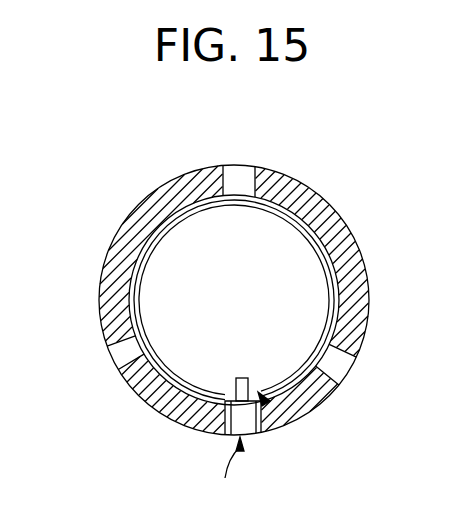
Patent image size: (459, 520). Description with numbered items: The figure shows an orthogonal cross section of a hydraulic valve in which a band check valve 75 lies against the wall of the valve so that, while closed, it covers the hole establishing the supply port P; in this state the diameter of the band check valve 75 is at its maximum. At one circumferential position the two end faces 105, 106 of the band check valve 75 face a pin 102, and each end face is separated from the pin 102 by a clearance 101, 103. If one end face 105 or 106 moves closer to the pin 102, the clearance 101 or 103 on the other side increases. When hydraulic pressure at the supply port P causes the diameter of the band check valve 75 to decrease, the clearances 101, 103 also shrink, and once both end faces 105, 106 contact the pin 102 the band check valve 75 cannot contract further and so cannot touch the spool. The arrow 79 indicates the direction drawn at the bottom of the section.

The band check valve 75 is at (298, 218).
The insertion direction 79 is at (218, 467).
The clearance 101 is at (208, 409).
The pin 102 is at (238, 378).
The clearance 103 is at (268, 409).
The end face 105 is at (276, 396).
The end face 106 is at (155, 402).
The supply port P is at (236, 173).